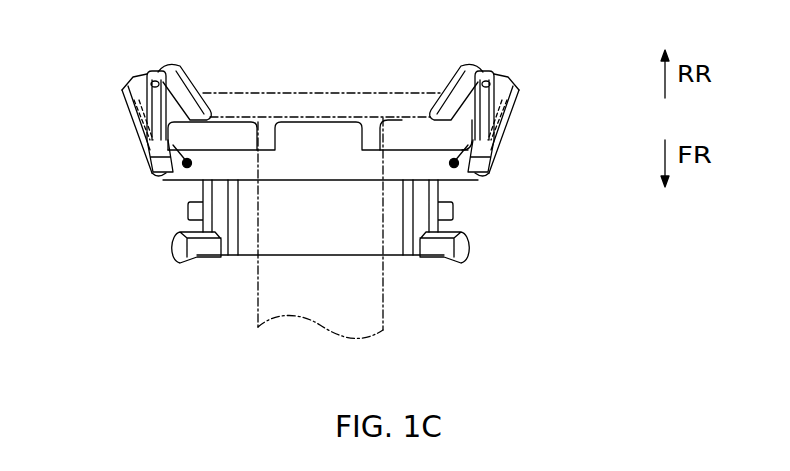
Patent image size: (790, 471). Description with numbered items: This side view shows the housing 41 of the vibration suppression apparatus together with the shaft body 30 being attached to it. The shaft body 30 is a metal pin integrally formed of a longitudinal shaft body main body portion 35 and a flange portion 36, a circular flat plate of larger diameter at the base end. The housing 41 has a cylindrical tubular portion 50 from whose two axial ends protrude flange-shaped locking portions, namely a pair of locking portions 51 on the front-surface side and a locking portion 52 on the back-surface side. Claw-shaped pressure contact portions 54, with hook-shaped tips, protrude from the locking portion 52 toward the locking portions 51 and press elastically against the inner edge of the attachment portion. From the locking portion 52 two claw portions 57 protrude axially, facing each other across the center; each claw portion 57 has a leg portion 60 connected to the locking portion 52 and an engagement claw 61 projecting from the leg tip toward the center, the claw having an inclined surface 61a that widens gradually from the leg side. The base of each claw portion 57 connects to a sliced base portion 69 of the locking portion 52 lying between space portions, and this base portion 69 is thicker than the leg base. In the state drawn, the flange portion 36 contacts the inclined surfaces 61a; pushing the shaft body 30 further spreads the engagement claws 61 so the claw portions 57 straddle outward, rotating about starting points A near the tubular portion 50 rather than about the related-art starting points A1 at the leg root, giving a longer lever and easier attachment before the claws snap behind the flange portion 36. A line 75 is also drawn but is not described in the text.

The shaft body 30 is at (250, 315).
The shaft body main body portion 35 is at (383, 318).
The flange portion 36 is at (292, 93).
The housing 41 is at (136, 160).
The tubular portion 50 is at (262, 234).
The locking portion 51 is at (176, 263).
The locking portion 52 is at (403, 160).
The pressure contact portion 54 is at (185, 216).
The claw portion 57 is at (165, 73).
The leg portion 60 is at (137, 112).
The engagement claw 61 is at (132, 82).
The inclined surface 61a is at (194, 72).
The base portion 69 is at (172, 196).
The rib 75 is at (320, 132).
The starting point A is at (160, 176).
The starting point A1 is at (148, 137).